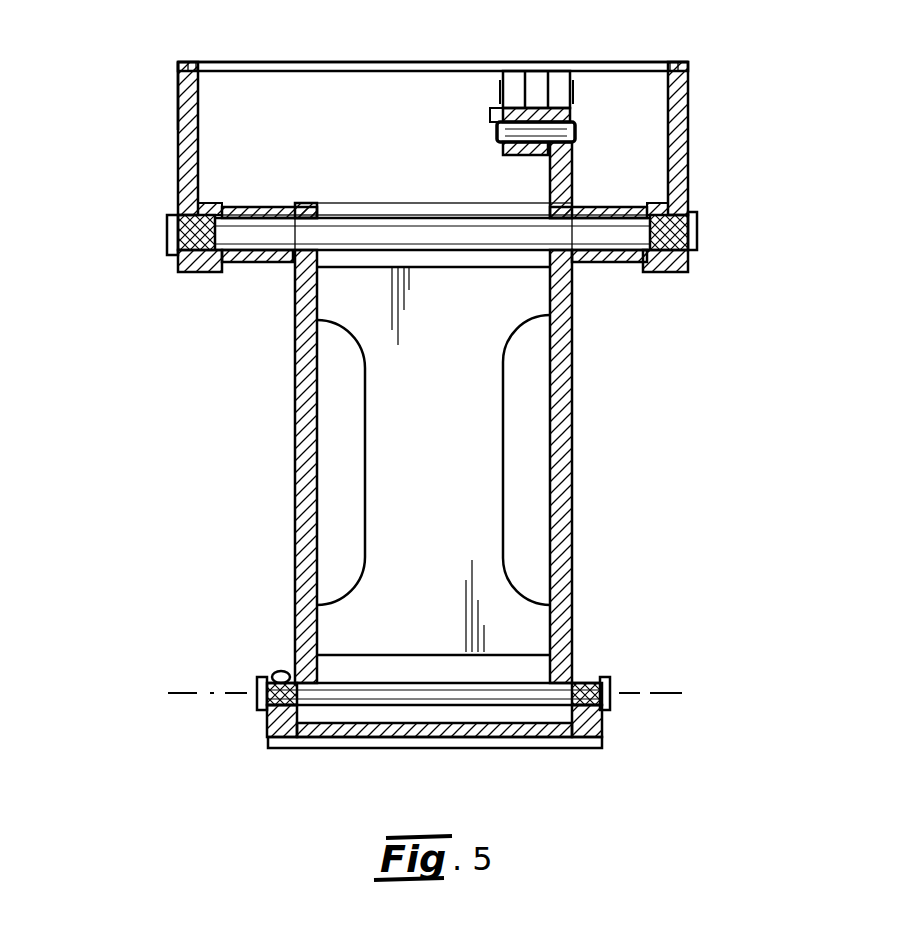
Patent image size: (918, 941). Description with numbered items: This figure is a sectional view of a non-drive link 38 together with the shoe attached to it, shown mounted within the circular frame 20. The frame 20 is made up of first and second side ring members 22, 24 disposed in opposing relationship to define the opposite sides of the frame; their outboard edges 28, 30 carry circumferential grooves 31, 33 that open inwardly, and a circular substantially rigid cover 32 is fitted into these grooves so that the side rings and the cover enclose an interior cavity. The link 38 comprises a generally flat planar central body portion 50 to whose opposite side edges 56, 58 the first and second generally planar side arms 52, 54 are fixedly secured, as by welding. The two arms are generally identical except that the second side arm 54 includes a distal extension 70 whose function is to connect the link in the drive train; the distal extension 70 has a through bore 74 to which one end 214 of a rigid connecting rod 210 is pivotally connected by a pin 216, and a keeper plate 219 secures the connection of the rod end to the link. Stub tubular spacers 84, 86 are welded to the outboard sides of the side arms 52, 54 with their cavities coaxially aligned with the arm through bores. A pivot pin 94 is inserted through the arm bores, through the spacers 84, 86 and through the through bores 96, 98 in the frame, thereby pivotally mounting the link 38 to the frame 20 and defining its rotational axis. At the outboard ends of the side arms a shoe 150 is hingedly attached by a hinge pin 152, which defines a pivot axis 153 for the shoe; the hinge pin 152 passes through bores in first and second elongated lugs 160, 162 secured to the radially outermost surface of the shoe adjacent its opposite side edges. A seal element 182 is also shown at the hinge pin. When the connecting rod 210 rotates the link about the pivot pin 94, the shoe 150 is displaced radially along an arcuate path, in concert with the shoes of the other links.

The circular frame 20 is at (702, 178).
The first side ring member 22 is at (178, 128).
The second side ring member 24 is at (690, 155).
The outboard edge 28 is at (178, 72).
The outboard edge 30 is at (690, 64).
The circumferential groove 31 is at (194, 66).
The circular cover 32 is at (434, 60).
The circumferential groove 33 is at (677, 62).
The link 38 is at (587, 387).
The central body portion 50 is at (438, 432).
The first side arm 52 is at (295, 432).
The second side arm 54 is at (572, 430).
The side edge 56 is at (345, 627).
The side edge 58 is at (540, 623).
The distal extension 70 is at (548, 175).
The through bore 74 is at (578, 132).
The stub tubular spacer 84 is at (243, 207).
The stub tubular spacer 86 is at (615, 207).
The pivot pin 94 is at (389, 222).
The through bore 96 is at (198, 262).
The through bore 98 is at (672, 247).
The shoe 150 is at (500, 745).
The hinge pin 152 is at (417, 680).
The pivot axis 153 is at (185, 692).
The first elongated lug 160 is at (270, 740).
The second elongated lug 162 is at (598, 737).
The seal 182 is at (275, 672).
The connecting rod 210 is at (536, 70).
The end of rod 214 is at (540, 86).
The pin 216 is at (498, 130).
The keeper plate 219 is at (510, 90).